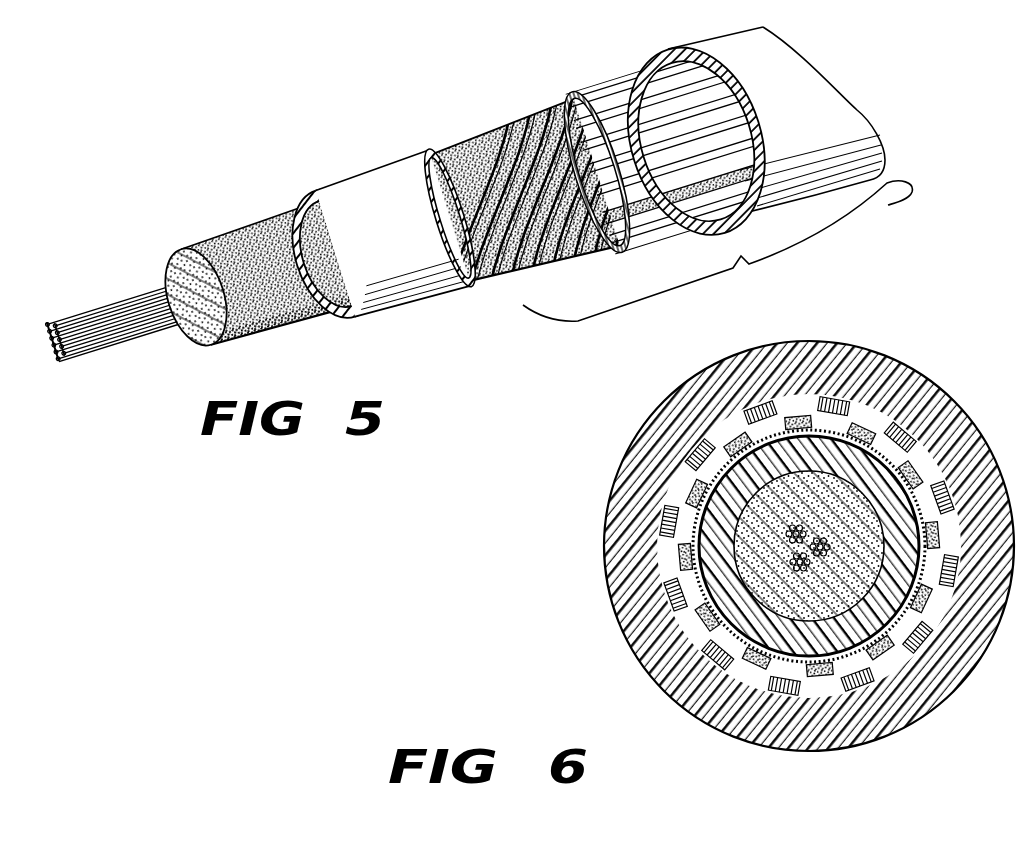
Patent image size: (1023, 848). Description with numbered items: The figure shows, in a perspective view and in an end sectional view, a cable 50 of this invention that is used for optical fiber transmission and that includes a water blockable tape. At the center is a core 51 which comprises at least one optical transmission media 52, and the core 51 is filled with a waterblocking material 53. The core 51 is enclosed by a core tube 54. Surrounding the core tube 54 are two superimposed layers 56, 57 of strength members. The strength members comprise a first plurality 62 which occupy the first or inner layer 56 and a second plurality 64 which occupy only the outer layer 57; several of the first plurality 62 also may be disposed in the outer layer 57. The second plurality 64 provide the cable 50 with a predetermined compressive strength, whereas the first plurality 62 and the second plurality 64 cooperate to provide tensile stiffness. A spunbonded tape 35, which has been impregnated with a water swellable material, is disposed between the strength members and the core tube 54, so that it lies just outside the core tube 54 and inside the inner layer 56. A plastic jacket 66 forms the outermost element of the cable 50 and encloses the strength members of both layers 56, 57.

In FIG. 5, the cable 50 is at (500, 284).
In FIG. 6, the cable 50 is at (799, 535).
In FIG. 5, the core 51 is at (122, 313).
In FIG. 6, the core 51 is at (802, 544).
In FIG. 5, the optical transmission media 52 is at (136, 340).
In FIG. 6, the optical transmission media 52 is at (790, 566).
In FIG. 5, the waterblocking material 53 is at (215, 238).
In FIG. 6, the waterblocking material 53 is at (840, 488).
In FIG. 5, the core tube 54 is at (344, 190).
In FIG. 6, the core tube 54 is at (712, 633).
In FIG. 5, the spunbonded tape 35 is at (396, 165).
In FIG. 6, the spunbonded tape 35 is at (893, 571).
In FIG. 5, the inner layer of strength members 56 is at (428, 140).
In FIG. 5, the outer layer of strength members 57 is at (663, 134).
In FIG. 6, the outer layer of strength members 57 is at (770, 546).
In FIG. 5, the first plurality of strength members 62 is at (500, 135).
In FIG. 6, the first plurality of strength members 62 is at (667, 507).
In FIG. 5, the second plurality of strength members 64 is at (720, 105).
In FIG. 6, the second plurality of strength members 64 is at (720, 416).
In FIG. 5, the plastic jacket 66 is at (655, 52).
In FIG. 6, the plastic jacket 66 is at (741, 360).